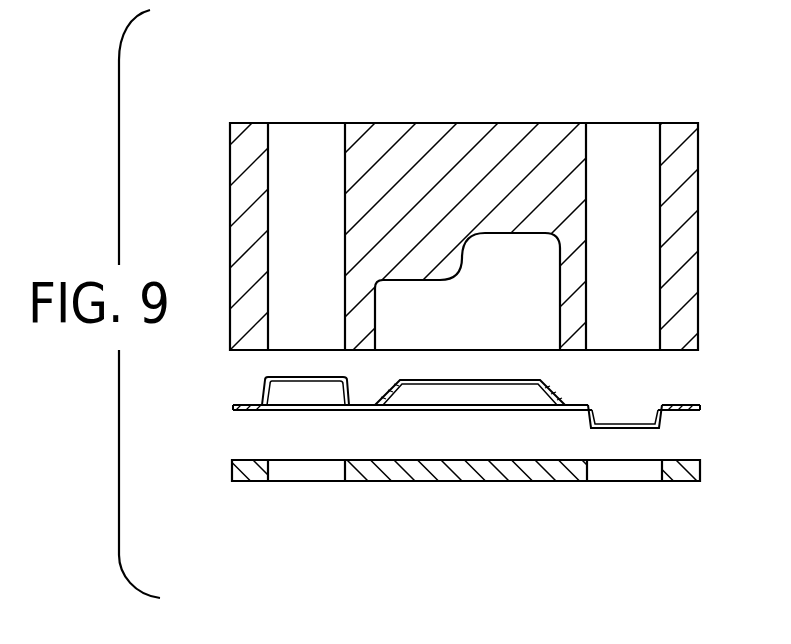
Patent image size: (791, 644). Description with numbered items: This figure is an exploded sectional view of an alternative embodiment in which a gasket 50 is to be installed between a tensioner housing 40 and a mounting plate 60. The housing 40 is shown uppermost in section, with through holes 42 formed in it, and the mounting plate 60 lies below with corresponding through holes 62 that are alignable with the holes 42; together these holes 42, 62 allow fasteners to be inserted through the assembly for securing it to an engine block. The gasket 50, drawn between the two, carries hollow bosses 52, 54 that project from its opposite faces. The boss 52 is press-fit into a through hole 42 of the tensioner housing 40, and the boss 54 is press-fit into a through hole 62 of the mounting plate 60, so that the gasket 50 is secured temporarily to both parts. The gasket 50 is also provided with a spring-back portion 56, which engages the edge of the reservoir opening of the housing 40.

The tensioner housing 40 is at (447, 123).
The through holes 42 is at (345, 150).
The gasket 50 is at (487, 401).
The hollow boss 52 is at (264, 392).
The hollow boss 54 is at (668, 422).
The spring-back portion 56 is at (397, 382).
The mounting plate 60 is at (232, 476).
The through holes 62 is at (343, 481).